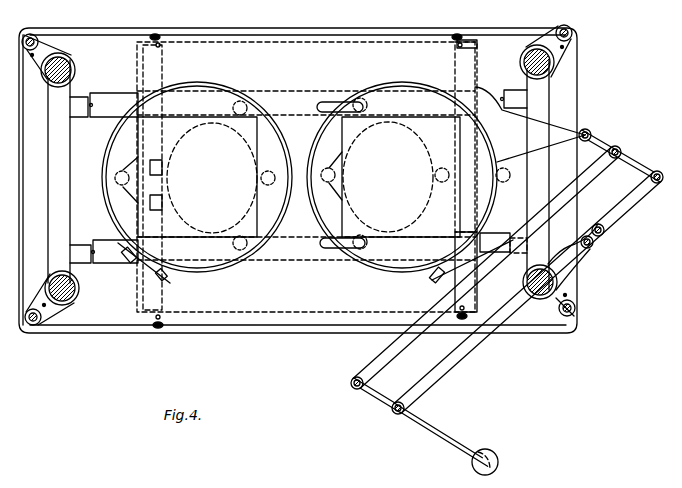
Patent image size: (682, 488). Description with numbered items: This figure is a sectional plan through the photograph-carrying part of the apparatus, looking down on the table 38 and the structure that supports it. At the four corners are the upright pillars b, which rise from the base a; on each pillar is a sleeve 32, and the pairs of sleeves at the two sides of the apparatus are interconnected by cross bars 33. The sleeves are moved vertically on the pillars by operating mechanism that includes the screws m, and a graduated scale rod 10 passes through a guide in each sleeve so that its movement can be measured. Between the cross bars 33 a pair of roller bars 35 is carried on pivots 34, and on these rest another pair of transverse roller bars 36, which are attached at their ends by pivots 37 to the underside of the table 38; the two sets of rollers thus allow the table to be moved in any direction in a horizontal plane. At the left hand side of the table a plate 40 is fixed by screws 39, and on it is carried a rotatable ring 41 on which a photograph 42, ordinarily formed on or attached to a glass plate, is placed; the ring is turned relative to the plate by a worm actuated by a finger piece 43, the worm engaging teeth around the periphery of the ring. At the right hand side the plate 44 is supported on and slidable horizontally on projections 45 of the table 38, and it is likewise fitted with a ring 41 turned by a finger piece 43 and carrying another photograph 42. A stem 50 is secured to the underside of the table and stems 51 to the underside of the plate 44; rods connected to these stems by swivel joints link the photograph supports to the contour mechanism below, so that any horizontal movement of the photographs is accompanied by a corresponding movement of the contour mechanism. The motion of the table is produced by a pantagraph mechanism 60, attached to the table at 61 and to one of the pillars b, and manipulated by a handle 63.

The base a is at (108, 36).
The upright pillar b is at (50, 82).
The screw m is at (34, 36).
The graduated scale rod 10 is at (36, 53).
The sleeve 32 is at (75, 70).
The cross bar 33 is at (70, 175).
The pivot 34 is at (90, 113).
The roller bar 35 is at (113, 100).
The transverse roller bar 36 is at (162, 60).
The pivot 37 is at (156, 34).
The table 38 is at (272, 40).
The screw 39 is at (241, 100).
The plate 40 is at (190, 84).
The rotatable ring 41 is at (325, 131).
The photograph 42 is at (259, 118).
The finger piece 43 is at (170, 279).
The plate 44 is at (379, 82).
The projection 45 is at (362, 99).
The stem 50 is at (261, 178).
The stem 51 is at (336, 176).
The pantagraph mechanism 60 is at (463, 352).
The attachment point 61 is at (588, 133).
The handle 63 is at (488, 450).